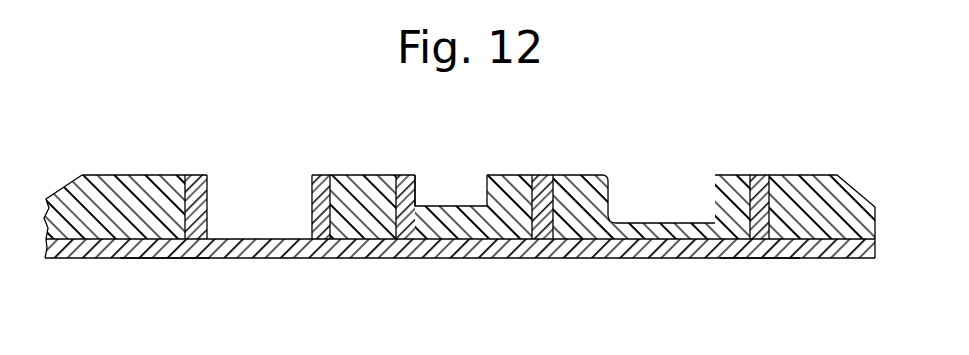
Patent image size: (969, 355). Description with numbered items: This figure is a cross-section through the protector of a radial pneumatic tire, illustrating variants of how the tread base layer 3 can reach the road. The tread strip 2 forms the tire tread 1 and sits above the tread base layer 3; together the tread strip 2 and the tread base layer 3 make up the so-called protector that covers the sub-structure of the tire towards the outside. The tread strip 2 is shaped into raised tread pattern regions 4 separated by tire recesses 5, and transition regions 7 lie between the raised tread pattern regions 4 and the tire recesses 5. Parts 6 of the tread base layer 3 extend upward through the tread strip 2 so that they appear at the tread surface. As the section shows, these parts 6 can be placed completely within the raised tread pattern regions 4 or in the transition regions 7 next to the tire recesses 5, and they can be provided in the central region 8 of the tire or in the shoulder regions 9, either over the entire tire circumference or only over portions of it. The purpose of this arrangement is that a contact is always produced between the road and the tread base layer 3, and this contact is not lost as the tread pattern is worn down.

The tire tread 1 is at (459, 203).
The tread strip 2 is at (459, 225).
The tread base layer 3 is at (618, 247).
The raised tread pattern regions 4 is at (106, 197).
The tire recesses 5 is at (191, 220).
The parts of the tread base layer 6 is at (197, 203).
The transition regions 7 is at (187, 173).
The central region 8 is at (470, 260).
The shoulder regions 9 is at (165, 260).